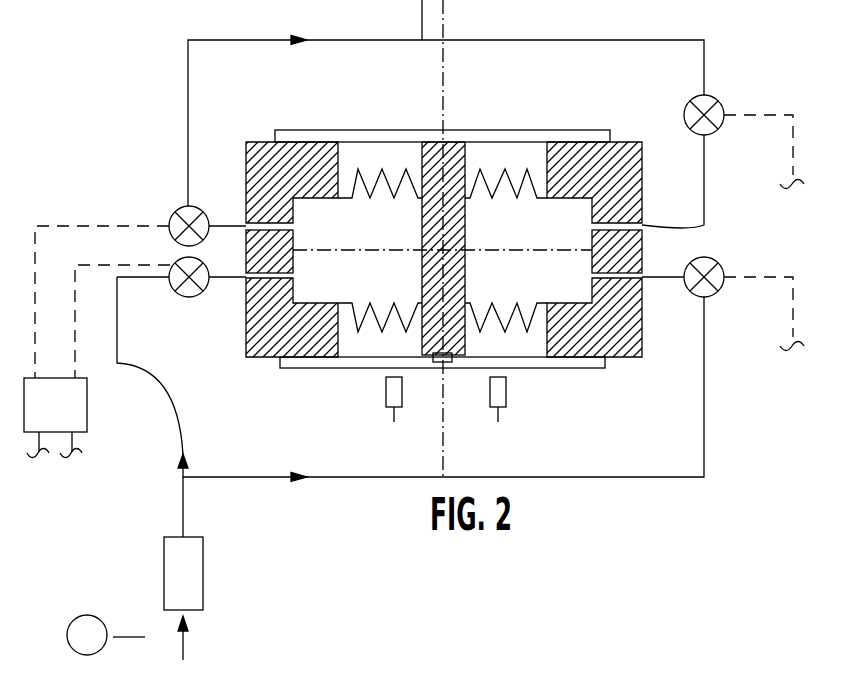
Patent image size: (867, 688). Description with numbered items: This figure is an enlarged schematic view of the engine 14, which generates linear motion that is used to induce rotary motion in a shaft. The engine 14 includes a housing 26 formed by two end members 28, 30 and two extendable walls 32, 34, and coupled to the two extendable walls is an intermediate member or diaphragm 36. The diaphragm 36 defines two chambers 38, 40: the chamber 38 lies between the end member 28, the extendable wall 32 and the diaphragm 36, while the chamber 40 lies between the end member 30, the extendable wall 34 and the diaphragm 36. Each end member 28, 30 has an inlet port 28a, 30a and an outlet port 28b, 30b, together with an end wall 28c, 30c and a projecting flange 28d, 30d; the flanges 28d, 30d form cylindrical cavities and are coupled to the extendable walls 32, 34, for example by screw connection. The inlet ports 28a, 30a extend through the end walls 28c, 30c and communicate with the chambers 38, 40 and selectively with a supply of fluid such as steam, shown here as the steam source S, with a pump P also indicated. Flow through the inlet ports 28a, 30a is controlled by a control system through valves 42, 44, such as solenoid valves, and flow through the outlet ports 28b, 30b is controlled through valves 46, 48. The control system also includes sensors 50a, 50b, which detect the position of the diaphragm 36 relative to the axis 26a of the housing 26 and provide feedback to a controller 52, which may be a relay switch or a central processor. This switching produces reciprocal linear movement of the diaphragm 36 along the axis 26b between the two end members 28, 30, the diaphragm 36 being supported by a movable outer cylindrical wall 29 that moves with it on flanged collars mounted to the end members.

The engine 14 is at (690, 28).
The housing 26 is at (546, 94).
The axis of housing 26a is at (443, 440).
The axis 26b is at (513, 250).
The end member 28 is at (243, 255).
The inlet port 28a is at (245, 280).
The outlet port 28b is at (243, 223).
The end wall 28c is at (245, 343).
The projecting flange 28d is at (302, 158).
The outer cylindrical wall 29 is at (563, 130).
The end member 30 is at (642, 265).
The inlet port 30a is at (642, 278).
The outlet port 30b is at (690, 231).
The end wall 30c is at (642, 188).
The projecting flange 30d is at (587, 143).
The extendable wall 32 is at (390, 170).
The extendable wall 34 is at (497, 190).
The diaphragm 36 is at (452, 143).
The chamber 38 is at (343, 290).
The chamber / control system 40 is at (543, 288).
The valve 42 is at (185, 300).
The valve 44 is at (720, 263).
The valve 46 is at (200, 208).
The valve 48 is at (720, 103).
The sensor 50a is at (385, 384).
The sensor 50b is at (489, 384).
The controller 52 is at (75, 410).
The steam source S is at (205, 580).
The pump P is at (106, 635).